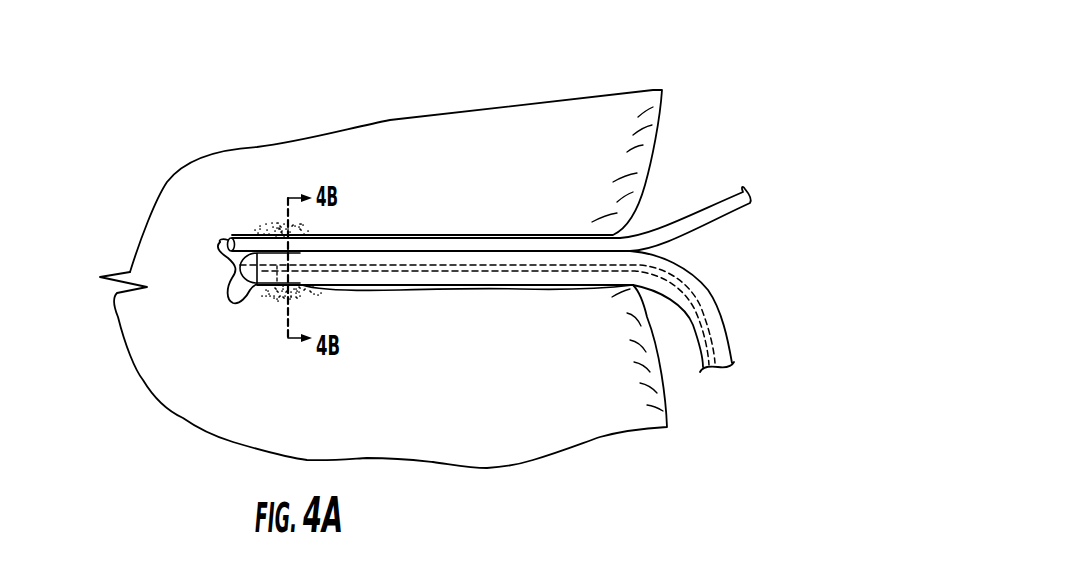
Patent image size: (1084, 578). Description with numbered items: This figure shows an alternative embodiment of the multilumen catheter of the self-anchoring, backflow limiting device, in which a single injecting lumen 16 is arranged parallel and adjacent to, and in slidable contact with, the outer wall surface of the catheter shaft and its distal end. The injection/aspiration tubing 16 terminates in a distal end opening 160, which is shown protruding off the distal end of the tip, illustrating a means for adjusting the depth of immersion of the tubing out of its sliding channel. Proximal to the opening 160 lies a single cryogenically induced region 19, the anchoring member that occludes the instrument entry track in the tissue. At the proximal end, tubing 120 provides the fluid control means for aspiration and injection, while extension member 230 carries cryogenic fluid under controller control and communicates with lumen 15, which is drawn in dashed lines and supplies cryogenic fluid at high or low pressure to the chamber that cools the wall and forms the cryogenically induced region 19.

The lumen 15 is at (545, 272).
The injecting lumen 16 is at (461, 236).
The cryogenically induced region 19 is at (276, 300).
The tubing 120 is at (710, 206).
The distal end opening 160 is at (218, 241).
The extension member 230 is at (720, 300).